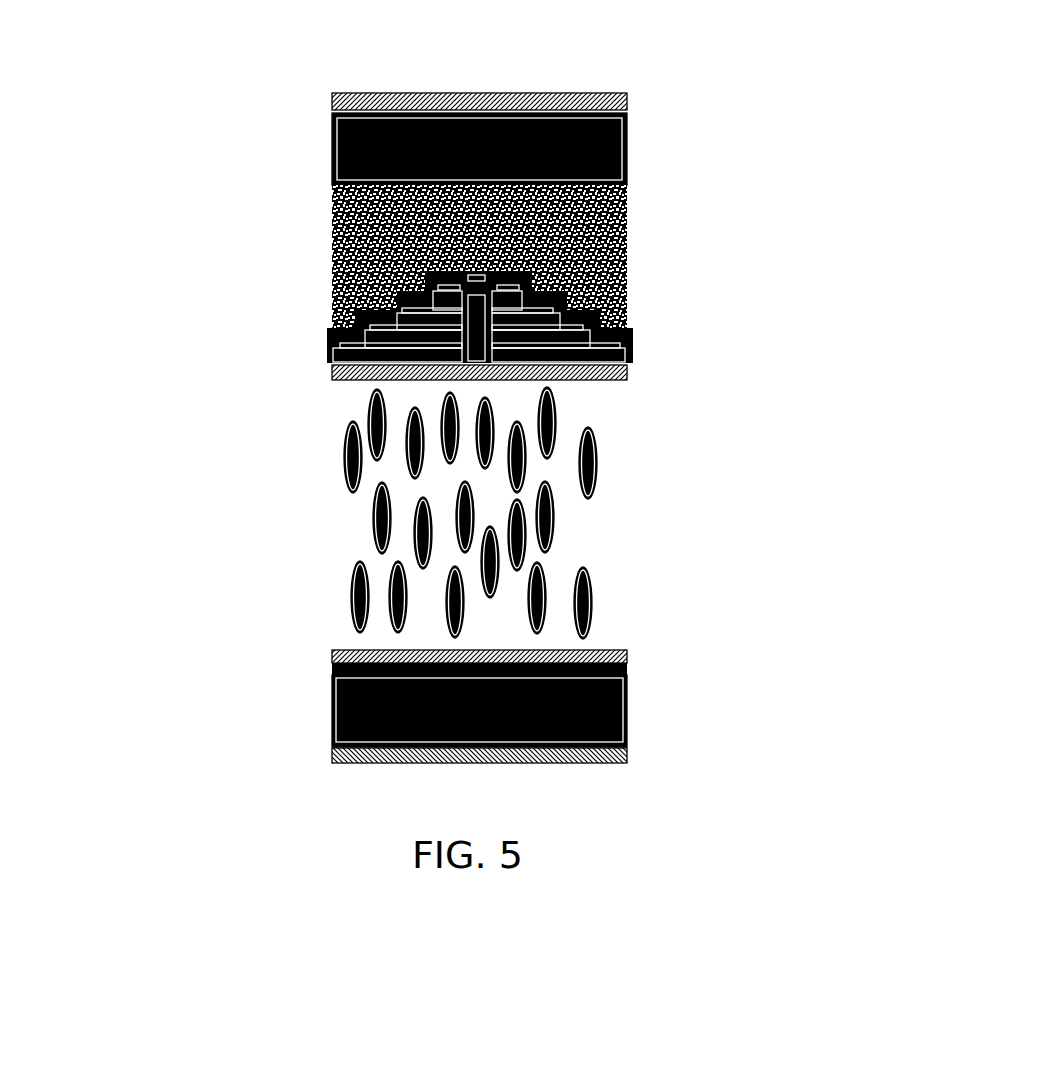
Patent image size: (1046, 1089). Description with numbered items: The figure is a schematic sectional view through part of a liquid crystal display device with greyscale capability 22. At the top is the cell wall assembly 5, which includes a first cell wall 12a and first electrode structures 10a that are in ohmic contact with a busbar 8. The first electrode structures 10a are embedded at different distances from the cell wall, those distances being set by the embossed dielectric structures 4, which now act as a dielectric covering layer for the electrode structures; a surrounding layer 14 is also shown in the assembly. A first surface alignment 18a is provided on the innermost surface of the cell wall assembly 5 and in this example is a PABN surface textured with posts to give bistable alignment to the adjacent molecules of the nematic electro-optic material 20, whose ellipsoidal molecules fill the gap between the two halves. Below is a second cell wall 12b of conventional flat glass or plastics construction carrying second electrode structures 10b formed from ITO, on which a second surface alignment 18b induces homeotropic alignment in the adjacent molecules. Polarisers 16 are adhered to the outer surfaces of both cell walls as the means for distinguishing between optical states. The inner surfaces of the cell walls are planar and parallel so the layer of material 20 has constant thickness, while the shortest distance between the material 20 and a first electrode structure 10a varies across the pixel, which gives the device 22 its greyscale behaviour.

The cell wall assembly 5 is at (270, 243).
The polarisers 16 is at (607, 95).
The first cell wall 12a is at (362, 157).
The insulating layer 14 is at (587, 250).
The first electrode structures 10a is at (496, 322).
The busbar 8 is at (477, 328).
The dielectric structures 4 is at (370, 345).
The first surface alignment 18a is at (617, 380).
The electro-optic material 20 is at (619, 515).
The second electrode structures 10b is at (453, 672).
The second surface alignment 18b is at (625, 652).
The second cell wall 12b is at (362, 708).
The display device with greyscale capability 22 is at (276, 823).